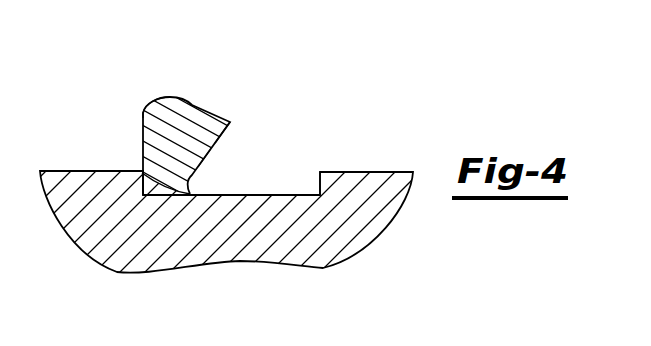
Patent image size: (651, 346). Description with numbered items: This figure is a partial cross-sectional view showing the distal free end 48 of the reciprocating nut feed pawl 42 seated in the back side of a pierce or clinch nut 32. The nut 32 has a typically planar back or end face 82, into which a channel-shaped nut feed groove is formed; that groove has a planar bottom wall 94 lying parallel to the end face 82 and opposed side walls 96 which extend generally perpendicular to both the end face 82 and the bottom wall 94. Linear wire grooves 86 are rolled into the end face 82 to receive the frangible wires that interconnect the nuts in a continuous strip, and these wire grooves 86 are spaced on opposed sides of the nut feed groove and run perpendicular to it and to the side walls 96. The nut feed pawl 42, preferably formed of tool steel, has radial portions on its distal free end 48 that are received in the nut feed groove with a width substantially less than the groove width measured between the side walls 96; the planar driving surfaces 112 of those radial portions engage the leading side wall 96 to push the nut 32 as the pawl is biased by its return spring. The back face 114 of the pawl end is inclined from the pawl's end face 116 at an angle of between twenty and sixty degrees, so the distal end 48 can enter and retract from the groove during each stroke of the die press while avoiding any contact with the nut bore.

The nut 32 is at (352, 245).
The nut feed pawl 42 is at (204, 104).
The distal free end of the nut feed pawl 48 is at (143, 112).
The end face 82 is at (363, 172).
The linear wire grooves 86 is at (319, 184).
The bottom wall 94 is at (265, 194).
The side walls 96 is at (200, 167).
The planar driving surfaces 112 is at (127, 184).
The back face 114 is at (219, 140).
The end face of the nut feed pawl 116 is at (152, 198).